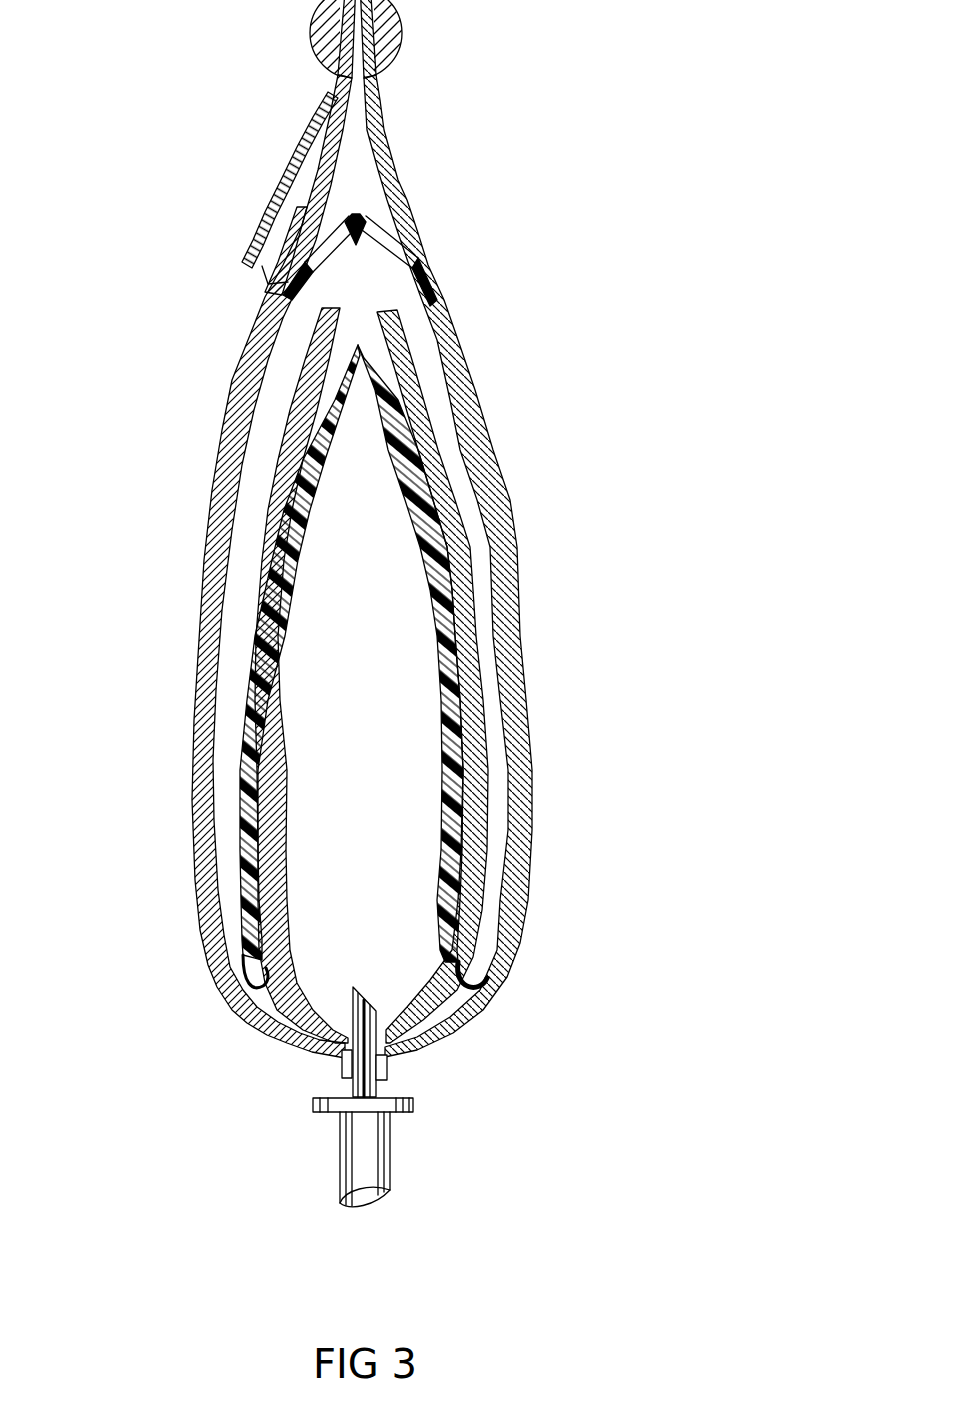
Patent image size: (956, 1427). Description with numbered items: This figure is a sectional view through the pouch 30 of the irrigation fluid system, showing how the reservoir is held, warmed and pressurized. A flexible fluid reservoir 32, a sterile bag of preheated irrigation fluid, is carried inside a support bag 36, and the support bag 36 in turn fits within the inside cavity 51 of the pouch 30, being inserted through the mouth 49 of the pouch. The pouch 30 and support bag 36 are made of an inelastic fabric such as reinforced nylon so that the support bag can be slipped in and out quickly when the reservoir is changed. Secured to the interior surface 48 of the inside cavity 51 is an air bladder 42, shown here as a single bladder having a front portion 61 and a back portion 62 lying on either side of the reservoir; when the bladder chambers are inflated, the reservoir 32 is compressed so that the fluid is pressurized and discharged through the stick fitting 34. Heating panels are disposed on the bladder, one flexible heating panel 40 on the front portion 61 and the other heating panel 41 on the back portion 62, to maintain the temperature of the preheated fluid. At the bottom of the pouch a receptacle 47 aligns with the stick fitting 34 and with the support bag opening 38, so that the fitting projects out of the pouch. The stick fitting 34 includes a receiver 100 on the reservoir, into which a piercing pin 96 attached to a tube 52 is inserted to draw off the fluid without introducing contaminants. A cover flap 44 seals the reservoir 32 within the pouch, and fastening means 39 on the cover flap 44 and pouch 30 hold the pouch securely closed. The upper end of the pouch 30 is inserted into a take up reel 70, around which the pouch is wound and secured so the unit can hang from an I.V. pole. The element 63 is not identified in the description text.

The pouch 30 is at (530, 825).
The fluid reservoir 32 is at (447, 636).
The stick fitting 34 is at (491, 1249).
The support bag 36 is at (443, 548).
The support bag opening 38 is at (235, 1103).
The fastening means 39 is at (210, 277).
The flexible heating panel 40 is at (258, 847).
The heating panel 41 is at (467, 898).
The air bladder 42 is at (237, 594).
The cover flap 44 is at (253, 226).
The receptacle 47 is at (393, 1058).
The interior surface 48 is at (343, 117).
The mouth 49 is at (332, 160).
The inside cavity 51 is at (355, 190).
The tube 52 is at (368, 1163).
The front portion 61 is at (225, 770).
The back portion 62 is at (497, 770).
The strip ends 63 is at (280, 708).
The take up reel 70 is at (382, 25).
The piercing pin 96 is at (360, 1012).
The receiver 100 is at (378, 1087).